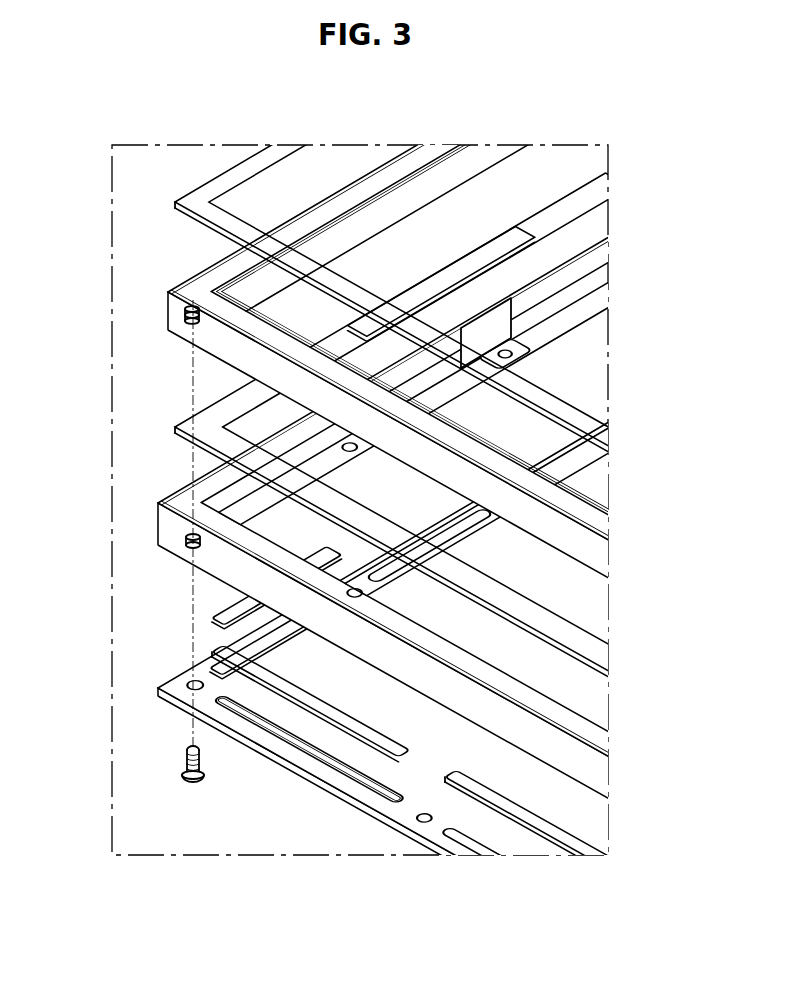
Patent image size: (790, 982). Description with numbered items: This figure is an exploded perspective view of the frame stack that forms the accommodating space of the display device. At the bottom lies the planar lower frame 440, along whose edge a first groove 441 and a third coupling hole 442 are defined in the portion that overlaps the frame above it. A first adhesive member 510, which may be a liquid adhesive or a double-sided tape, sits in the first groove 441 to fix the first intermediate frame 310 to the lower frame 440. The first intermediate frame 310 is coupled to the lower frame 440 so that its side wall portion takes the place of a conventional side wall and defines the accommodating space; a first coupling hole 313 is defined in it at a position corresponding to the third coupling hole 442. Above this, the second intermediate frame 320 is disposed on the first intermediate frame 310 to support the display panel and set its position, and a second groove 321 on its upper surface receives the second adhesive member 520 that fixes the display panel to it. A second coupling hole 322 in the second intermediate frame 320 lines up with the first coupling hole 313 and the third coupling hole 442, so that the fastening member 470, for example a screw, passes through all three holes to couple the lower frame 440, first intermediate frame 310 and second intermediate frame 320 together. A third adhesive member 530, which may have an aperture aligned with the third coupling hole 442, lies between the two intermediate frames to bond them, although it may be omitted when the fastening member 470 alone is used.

The first intermediate frame 310 is at (168, 528).
The first coupling hole 313 is at (514, 350).
The second intermediate frame 320 is at (356, 226).
The second groove 321 is at (398, 173).
The second coupling hole 322 is at (186, 313).
The lower frame 440 is at (425, 897).
The first groove 441 is at (358, 787).
The third coupling hole 442 is at (421, 824).
The fastening member 470 is at (193, 782).
The first adhesive member 510 is at (503, 816).
The second adhesive member 520 is at (216, 188).
The third adhesive member 530 is at (217, 408).